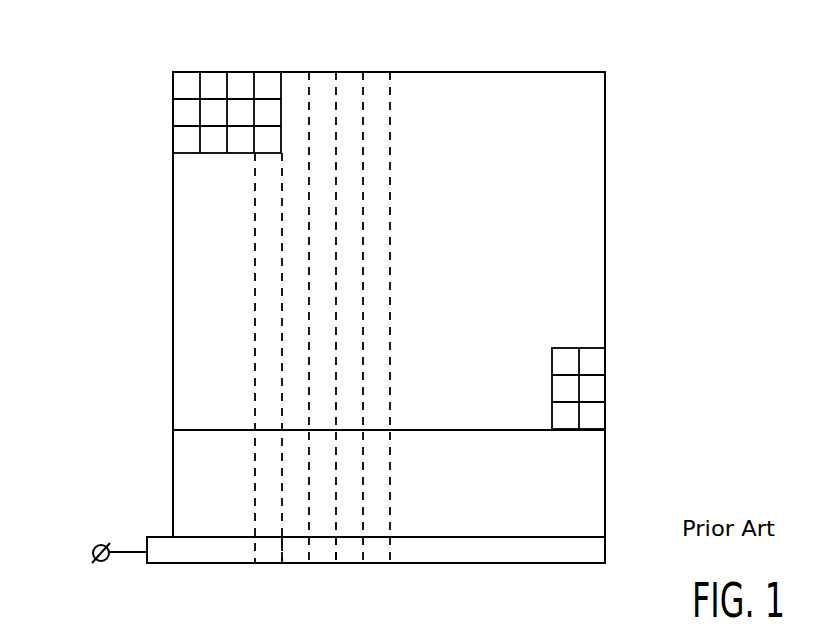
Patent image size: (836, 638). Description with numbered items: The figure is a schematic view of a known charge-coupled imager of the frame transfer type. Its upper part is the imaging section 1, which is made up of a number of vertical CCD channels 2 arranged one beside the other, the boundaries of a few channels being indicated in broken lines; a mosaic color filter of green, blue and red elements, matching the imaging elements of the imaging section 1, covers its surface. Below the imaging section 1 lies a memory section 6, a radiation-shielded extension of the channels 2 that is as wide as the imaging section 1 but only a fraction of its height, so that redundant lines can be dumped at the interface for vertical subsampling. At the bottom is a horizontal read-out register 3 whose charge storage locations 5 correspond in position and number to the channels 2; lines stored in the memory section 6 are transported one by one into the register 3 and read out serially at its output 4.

The imaging section 1 is at (587, 199).
The vertical CCD channels 2 is at (294, 82).
The horizontal read-out register 3 is at (530, 550).
The output 4 is at (101, 545).
The charge storage locations 5 is at (298, 553).
The memory section 6 is at (588, 482).